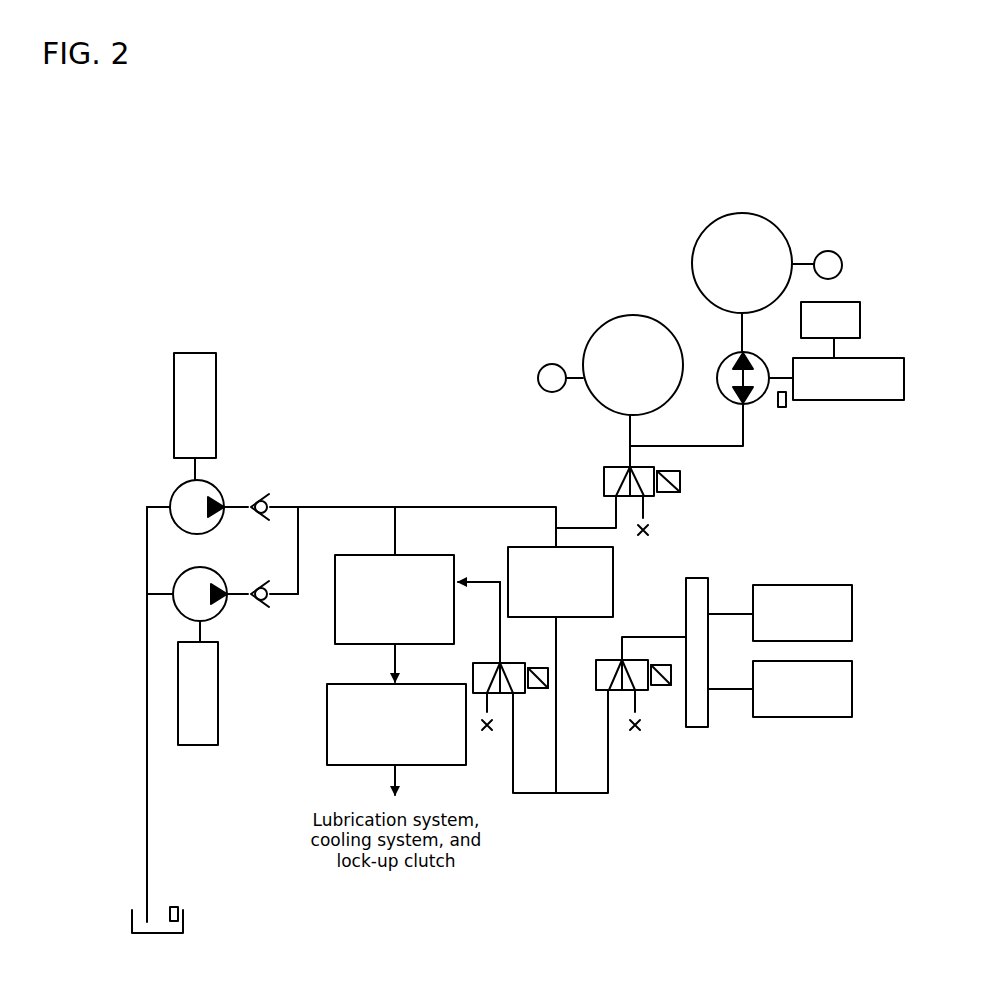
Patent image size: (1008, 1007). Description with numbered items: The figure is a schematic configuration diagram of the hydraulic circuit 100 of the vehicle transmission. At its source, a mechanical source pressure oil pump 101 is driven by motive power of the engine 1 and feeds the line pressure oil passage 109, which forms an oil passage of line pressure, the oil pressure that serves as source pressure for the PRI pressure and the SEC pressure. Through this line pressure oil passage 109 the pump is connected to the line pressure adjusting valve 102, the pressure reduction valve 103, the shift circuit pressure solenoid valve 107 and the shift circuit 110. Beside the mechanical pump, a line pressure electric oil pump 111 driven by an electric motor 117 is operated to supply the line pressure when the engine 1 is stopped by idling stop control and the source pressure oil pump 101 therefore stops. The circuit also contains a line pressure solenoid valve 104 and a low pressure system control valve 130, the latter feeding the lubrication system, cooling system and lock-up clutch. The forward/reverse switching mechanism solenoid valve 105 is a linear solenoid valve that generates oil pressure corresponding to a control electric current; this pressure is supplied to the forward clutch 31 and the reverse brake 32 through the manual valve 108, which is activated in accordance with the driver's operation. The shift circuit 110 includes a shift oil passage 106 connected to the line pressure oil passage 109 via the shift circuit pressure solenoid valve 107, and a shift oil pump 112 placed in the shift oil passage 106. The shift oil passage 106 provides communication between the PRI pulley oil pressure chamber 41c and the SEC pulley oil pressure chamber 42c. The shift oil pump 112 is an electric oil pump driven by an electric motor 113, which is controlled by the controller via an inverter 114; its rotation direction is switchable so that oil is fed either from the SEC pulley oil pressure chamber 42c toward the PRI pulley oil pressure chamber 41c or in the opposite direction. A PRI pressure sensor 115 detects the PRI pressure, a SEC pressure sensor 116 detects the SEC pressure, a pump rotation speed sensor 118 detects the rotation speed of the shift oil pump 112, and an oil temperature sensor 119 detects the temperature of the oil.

The engine 1 is at (216, 394).
The hydraulic circuit 100 is at (93, 740).
The source pressure oil pump 101 is at (172, 490).
The line pressure adjusting valve 102 is at (452, 558).
The pressure reduction valve 103 is at (613, 571).
The line pressure solenoid valve 104 is at (503, 661).
The forward/reverse switching mechanism solenoid valve 105 is at (608, 658).
The shift oil passage 106 is at (710, 448).
The shift circuit pressure solenoid valve 107 is at (610, 466).
The manual valve 108 is at (697, 727).
The line pressure oil passage 109 is at (470, 505).
The shift circuit 110 is at (577, 240).
The line pressure electric oil pump 111 is at (220, 614).
The shift oil pump 112 is at (722, 360).
The electric motor 113 is at (838, 400).
The inverter 114 is at (860, 308).
The PRI pressure sensor 115 is at (838, 255).
The SEC pressure sensor 116 is at (541, 367).
The electric motor 117 is at (218, 708).
The pump rotation speed sensor 118 is at (782, 408).
The oil temperature sensor 119 is at (174, 905).
The low pressure system control valve 130 is at (327, 710).
The forward clutch 31 is at (832, 584).
The reverse brake 32 is at (832, 717).
The PRI pulley oil pressure chamber 41c is at (696, 232).
The SEC pulley oil pressure chamber 42c is at (594, 334).